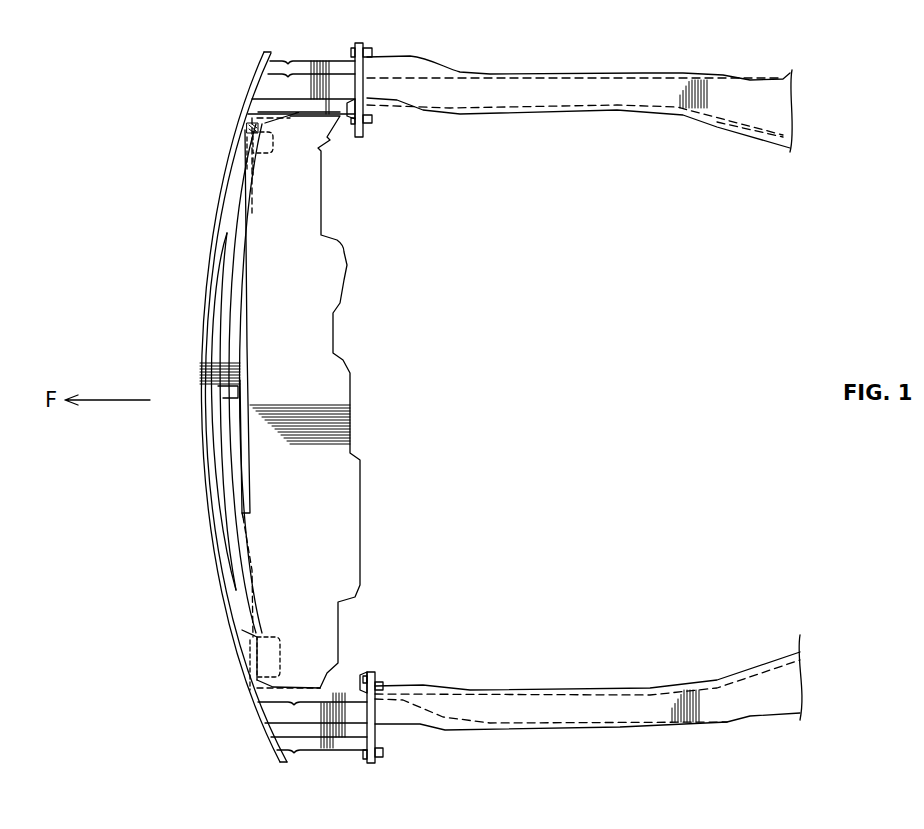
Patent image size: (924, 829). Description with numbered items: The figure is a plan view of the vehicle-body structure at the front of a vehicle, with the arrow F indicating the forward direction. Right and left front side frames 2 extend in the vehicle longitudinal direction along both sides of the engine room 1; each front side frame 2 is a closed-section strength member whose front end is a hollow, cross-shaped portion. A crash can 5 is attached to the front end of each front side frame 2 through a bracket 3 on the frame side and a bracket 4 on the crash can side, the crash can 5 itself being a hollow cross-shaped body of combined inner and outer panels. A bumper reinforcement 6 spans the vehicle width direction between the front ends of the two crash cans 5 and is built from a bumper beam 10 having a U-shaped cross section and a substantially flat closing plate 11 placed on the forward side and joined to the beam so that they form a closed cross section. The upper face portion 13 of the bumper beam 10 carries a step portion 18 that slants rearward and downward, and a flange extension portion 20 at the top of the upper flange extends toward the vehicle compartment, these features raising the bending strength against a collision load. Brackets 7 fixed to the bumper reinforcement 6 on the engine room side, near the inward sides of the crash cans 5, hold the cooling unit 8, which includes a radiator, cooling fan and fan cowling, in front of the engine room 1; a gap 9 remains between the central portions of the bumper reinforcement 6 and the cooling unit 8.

The engine room 1 is at (535, 400).
The front side frame 2 is at (548, 92).
The bracket 3 is at (365, 88).
The bracket 4 is at (347, 72).
The crash can 5 is at (305, 61).
The bumper reinforcement 6 is at (228, 407).
The bracket 7 is at (275, 152).
The cooling unit 8 is at (308, 496).
The gap 9 is at (243, 383).
The bumper beam 10 is at (257, 291).
The closing plate 11 is at (200, 458).
The upper face portion 13 is at (236, 456).
The step portion 18 is at (223, 398).
The flange extension portion 20 is at (213, 302).